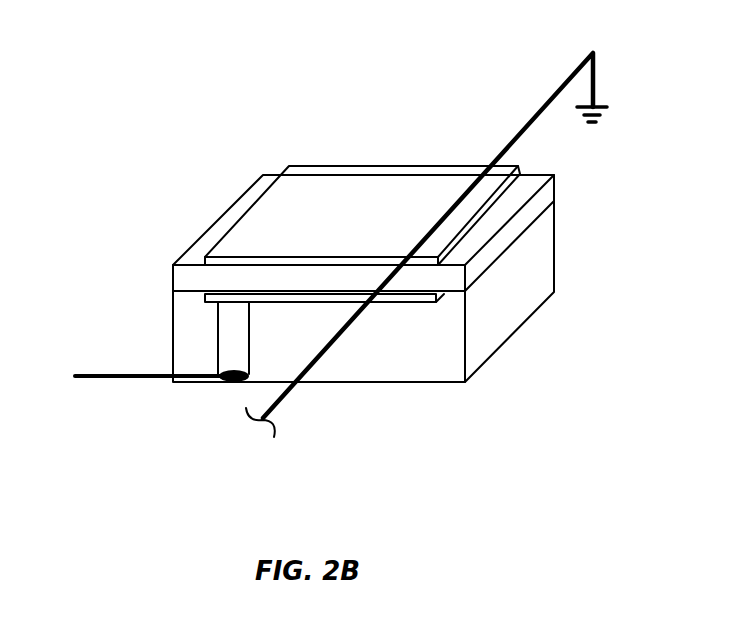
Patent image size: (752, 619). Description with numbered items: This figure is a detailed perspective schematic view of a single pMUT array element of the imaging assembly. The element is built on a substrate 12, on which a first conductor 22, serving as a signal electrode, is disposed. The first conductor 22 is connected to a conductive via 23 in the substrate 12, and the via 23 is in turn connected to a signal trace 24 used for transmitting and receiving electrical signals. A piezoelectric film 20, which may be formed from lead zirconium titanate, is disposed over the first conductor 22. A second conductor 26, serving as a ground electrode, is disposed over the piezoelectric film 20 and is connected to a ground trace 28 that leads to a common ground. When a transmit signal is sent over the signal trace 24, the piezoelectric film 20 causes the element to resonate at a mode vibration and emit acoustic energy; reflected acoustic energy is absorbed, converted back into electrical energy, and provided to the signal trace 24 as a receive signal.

The substrate 12 is at (532, 270).
The piezoelectric film 20 is at (199, 240).
The first conductor 22 is at (403, 302).
The conductive via 23 is at (217, 337).
The signal trace 24 is at (107, 372).
The second conductor 26 is at (328, 165).
The ground trace 28 is at (573, 73).